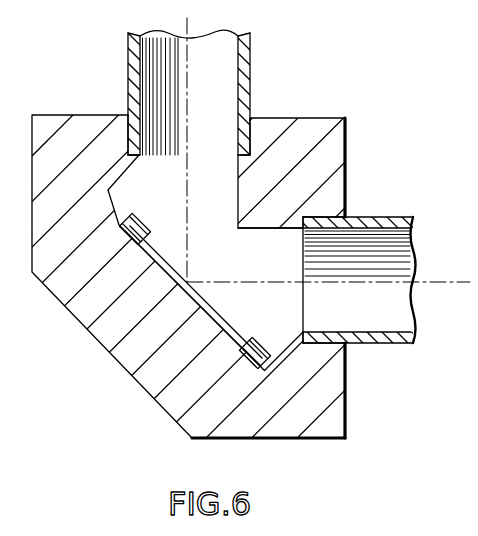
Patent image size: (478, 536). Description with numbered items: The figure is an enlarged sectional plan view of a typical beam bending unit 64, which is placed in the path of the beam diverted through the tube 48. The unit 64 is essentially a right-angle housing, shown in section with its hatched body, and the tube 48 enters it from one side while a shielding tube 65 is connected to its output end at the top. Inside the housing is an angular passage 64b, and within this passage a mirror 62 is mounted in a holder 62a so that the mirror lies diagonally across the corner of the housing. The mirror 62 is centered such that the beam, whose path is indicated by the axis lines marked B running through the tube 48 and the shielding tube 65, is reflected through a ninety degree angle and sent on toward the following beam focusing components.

The beam bending unit 64 is at (360, 137).
The shielding tube 65 is at (247, 58).
The tube 48 is at (391, 343).
The mirror 62 is at (212, 306).
The holder 62a is at (140, 228).
The angular passage 64b is at (260, 229).
The bore axis B is at (190, 96).